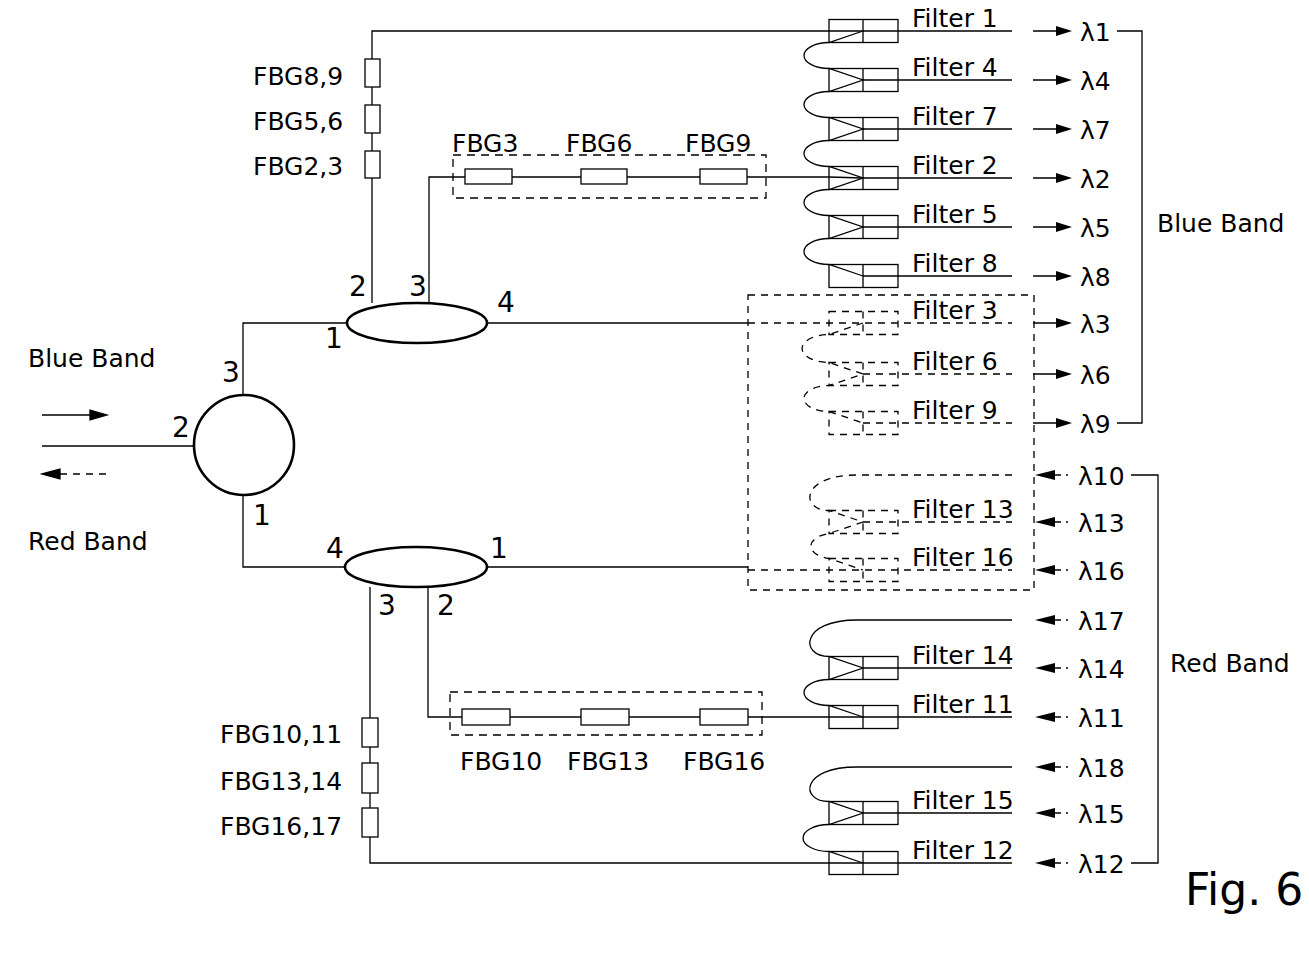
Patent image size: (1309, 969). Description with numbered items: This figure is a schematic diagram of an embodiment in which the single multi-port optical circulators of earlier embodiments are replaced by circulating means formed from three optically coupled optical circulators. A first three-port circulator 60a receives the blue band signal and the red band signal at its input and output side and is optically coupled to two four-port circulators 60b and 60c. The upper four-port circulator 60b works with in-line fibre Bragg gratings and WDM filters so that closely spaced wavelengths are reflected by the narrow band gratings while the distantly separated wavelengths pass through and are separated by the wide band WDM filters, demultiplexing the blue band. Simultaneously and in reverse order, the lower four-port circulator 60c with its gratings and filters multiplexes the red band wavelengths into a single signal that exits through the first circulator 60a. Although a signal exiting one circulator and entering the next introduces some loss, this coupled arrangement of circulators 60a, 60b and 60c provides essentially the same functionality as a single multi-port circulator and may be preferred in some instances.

The first 3-port optical circulator 60a is at (299, 445).
The 4-port optical circulator 60b is at (343, 289).
The 4-port optical circulator 60c is at (372, 604).